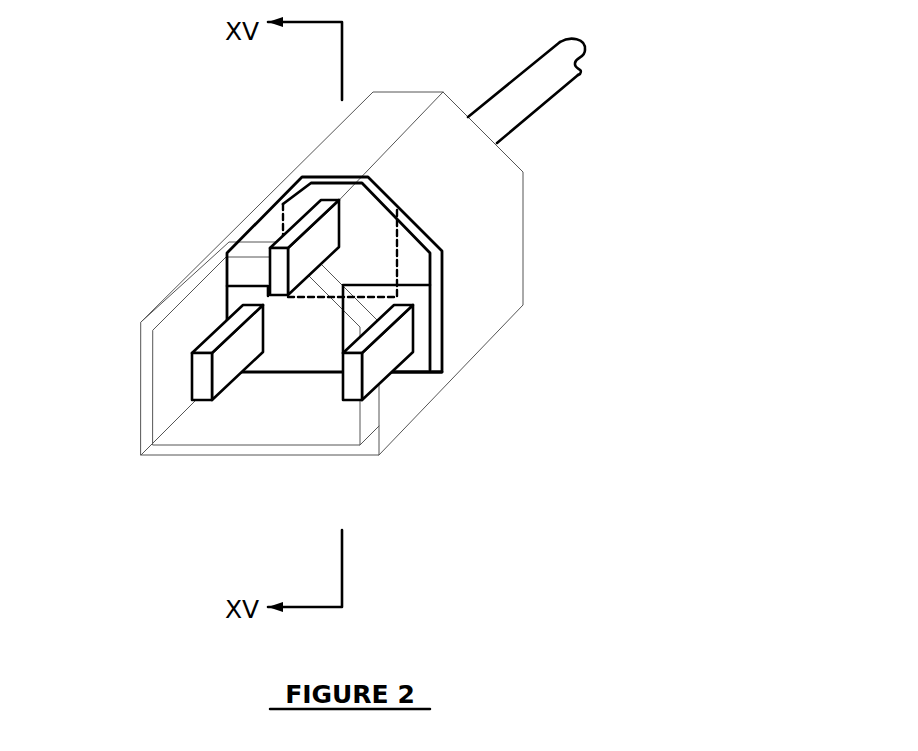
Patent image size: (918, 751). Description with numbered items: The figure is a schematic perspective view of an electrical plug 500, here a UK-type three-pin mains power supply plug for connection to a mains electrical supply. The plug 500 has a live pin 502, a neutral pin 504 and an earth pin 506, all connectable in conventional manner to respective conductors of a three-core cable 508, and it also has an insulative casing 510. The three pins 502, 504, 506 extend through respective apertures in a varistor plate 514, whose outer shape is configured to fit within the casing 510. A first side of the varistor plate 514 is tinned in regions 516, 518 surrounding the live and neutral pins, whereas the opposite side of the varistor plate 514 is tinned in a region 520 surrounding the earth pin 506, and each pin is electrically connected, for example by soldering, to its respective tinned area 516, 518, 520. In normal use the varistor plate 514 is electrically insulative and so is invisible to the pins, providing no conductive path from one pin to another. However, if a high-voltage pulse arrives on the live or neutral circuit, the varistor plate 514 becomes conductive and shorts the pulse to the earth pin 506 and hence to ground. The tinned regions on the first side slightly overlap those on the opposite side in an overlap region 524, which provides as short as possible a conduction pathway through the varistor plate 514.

The electrical plug 500 is at (195, 133).
The live pin 502 is at (378, 372).
The neutral pin 504 is at (202, 390).
The earth pin 506 is at (282, 242).
The three-core cable 508 is at (543, 85).
The insulative casing 510 is at (490, 237).
The varistor plate 514 is at (247, 277).
The tinned region 516 is at (420, 352).
The tinned region 518 is at (307, 205).
The tinned region 520 is at (398, 248).
The overlap region 524 is at (368, 290).